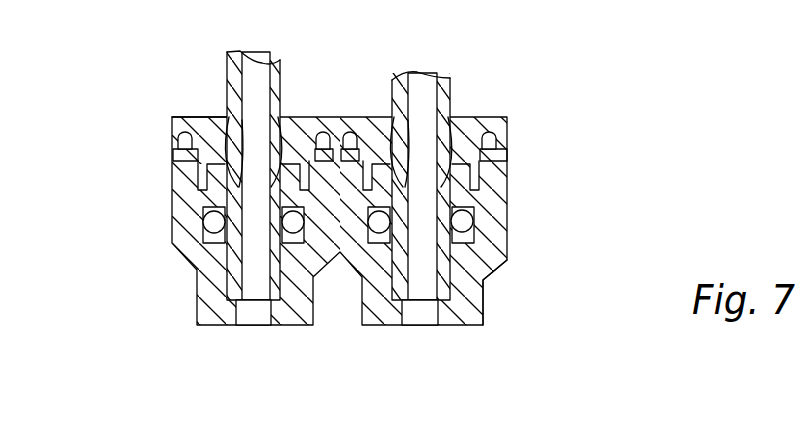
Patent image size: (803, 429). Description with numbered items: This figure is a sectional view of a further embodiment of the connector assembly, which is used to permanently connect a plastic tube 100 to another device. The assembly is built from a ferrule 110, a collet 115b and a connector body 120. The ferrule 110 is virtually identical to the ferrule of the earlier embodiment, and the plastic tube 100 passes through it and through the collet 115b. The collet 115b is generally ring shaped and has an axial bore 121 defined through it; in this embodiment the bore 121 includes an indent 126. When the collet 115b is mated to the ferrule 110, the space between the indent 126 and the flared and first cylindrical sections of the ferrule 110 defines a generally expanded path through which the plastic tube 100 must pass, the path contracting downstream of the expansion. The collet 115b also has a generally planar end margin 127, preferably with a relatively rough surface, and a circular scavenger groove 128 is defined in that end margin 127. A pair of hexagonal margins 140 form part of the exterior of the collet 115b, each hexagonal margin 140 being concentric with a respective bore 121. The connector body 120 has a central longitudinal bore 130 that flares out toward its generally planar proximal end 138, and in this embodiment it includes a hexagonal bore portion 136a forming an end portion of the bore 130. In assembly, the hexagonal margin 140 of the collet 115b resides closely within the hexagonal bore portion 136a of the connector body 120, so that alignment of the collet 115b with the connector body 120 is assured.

The plastic tube 100 is at (227, 65).
The ferrule 110 is at (237, 272).
The collet 115b is at (197, 117).
The connector body 120 is at (173, 246).
The axial bore 121 is at (225, 117).
The indent 126 is at (173, 177).
The end margin 127 is at (173, 230).
The scavenger groove 128 is at (180, 136).
The central longitudinal bore 130 is at (270, 308).
The hexagonal bore portion 136a is at (200, 212).
The proximal end 138 is at (455, 157).
The hexagonal margin 140 is at (507, 250).